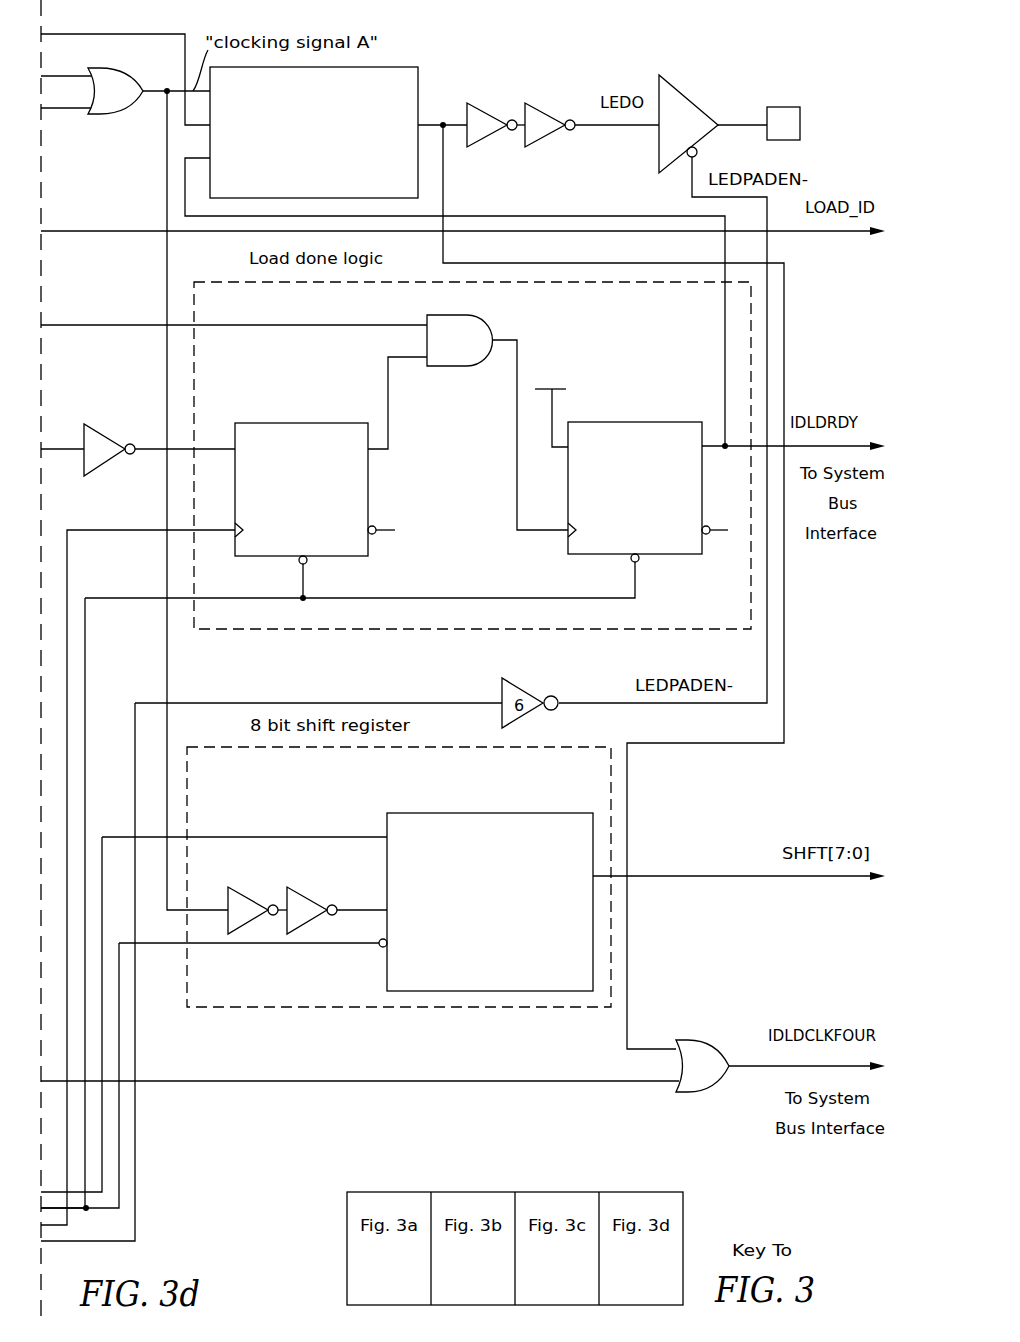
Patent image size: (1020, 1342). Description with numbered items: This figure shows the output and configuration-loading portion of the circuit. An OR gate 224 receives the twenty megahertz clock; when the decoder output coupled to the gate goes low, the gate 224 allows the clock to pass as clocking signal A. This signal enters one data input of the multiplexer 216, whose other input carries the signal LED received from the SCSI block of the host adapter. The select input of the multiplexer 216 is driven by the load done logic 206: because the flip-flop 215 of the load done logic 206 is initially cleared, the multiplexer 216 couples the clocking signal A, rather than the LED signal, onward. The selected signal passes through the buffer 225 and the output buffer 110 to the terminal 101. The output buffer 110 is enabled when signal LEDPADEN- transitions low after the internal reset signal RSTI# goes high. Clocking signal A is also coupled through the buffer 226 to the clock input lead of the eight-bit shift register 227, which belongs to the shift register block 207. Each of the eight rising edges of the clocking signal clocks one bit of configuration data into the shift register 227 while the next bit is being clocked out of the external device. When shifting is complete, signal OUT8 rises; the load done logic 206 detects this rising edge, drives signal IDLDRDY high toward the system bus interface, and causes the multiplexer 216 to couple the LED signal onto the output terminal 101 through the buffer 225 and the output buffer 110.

The OR gate 224 is at (119, 118).
The multiplexer 216 is at (393, 67).
The buffer 225 is at (492, 107).
The output buffer 110 is at (690, 95).
The terminal 101 is at (785, 107).
The load done logic 206 is at (463, 753).
The flip-flop 215 is at (665, 558).
The buffer 226 is at (253, 893).
The 8-bit shift register 227 is at (494, 812).
The 8-bit shift register block 207 is at (326, 651).